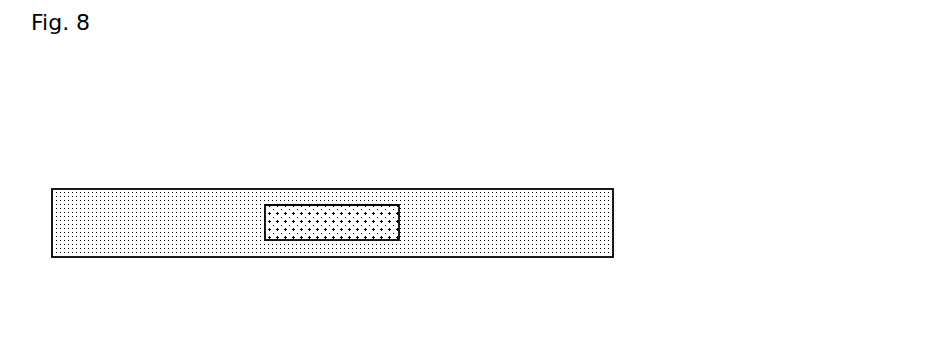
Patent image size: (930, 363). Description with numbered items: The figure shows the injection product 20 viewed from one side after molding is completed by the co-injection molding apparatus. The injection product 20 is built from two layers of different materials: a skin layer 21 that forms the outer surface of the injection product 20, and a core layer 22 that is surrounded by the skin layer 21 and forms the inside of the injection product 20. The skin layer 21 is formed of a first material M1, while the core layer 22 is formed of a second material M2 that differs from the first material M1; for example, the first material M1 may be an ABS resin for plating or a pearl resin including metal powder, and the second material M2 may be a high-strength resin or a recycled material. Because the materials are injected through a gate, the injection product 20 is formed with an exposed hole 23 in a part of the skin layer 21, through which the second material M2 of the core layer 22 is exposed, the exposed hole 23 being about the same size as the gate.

The injection product 20 is at (567, 140).
The skin layer 21 is at (222, 188).
The core layer 22 is at (366, 231).
The exposed hole 23 is at (330, 204).
The first material M1 is at (508, 206).
The second material M2 is at (318, 231).